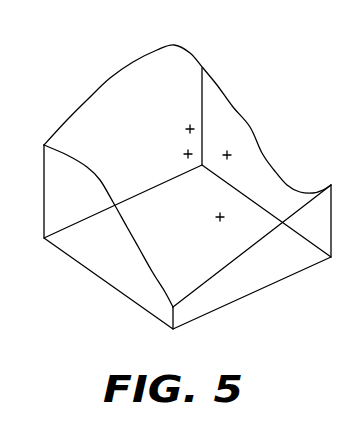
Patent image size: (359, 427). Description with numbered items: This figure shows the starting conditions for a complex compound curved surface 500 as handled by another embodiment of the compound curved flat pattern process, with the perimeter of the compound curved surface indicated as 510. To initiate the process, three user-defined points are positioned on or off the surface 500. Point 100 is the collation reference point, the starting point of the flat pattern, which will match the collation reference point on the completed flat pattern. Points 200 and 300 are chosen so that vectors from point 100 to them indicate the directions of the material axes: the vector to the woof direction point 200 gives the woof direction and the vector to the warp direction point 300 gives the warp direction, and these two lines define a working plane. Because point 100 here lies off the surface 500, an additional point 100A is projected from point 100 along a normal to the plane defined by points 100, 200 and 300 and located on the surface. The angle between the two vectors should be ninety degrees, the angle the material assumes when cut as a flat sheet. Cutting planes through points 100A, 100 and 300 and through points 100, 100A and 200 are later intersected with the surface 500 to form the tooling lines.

The surface 500 is at (133, 72).
The perimeter of the compound curved surface 510 is at (90, 94).
The additional point 100A is at (190, 129).
The collation reference point 100 is at (188, 154).
The woof direction point 200 is at (227, 155).
The warp direction point 300 is at (220, 217).